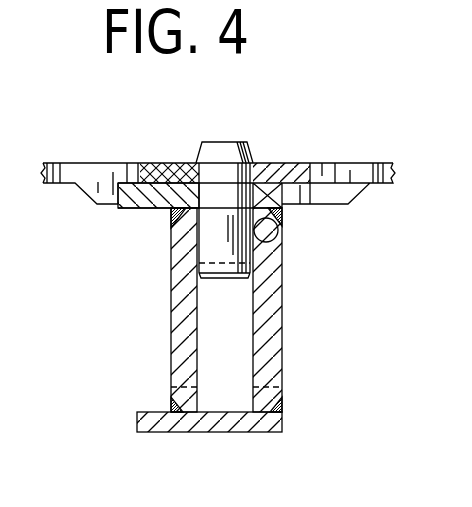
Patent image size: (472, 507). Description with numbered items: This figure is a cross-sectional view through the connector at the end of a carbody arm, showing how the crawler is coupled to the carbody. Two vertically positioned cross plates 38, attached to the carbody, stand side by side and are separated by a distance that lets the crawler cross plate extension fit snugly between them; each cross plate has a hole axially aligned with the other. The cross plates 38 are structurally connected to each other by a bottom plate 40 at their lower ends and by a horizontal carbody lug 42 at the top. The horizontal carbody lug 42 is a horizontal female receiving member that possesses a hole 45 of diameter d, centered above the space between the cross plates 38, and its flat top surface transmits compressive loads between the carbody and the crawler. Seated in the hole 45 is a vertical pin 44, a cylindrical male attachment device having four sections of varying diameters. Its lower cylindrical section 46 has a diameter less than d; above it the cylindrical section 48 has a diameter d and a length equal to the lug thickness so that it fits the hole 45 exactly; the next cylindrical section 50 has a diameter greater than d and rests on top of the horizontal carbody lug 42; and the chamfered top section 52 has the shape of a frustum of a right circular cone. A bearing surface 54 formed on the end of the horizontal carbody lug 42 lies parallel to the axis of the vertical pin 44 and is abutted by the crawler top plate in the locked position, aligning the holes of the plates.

The cross plates 38 is at (171, 342).
The bottom plate 40 is at (215, 432).
The horizontal carbody lug 42 is at (138, 208).
The vertical pin 44 is at (222, 250).
The hole 45 is at (153, 165).
The lower cylindrical section 46 is at (252, 257).
The cylindrical section 48 is at (267, 163).
The cylindrical section 50 is at (182, 163).
The chamfered top section 52 is at (196, 162).
The bearing surface 54 is at (278, 238).